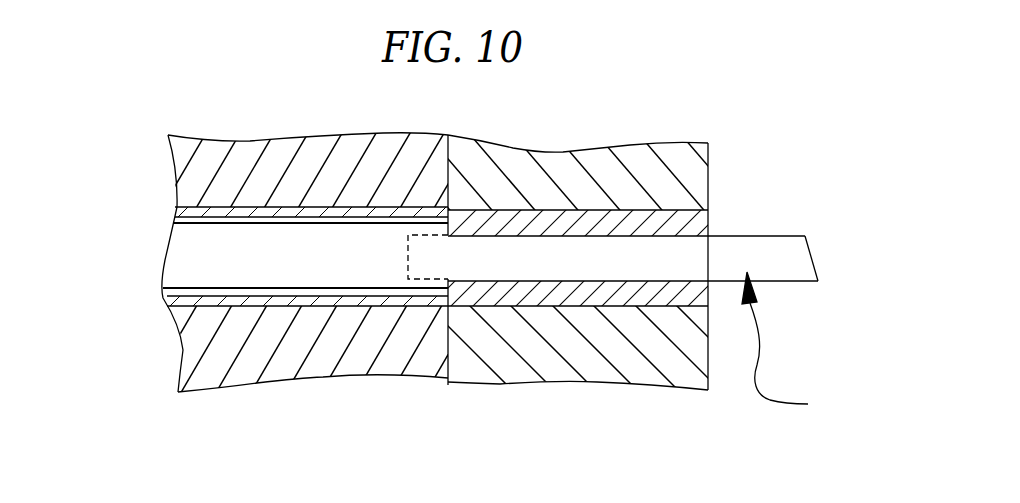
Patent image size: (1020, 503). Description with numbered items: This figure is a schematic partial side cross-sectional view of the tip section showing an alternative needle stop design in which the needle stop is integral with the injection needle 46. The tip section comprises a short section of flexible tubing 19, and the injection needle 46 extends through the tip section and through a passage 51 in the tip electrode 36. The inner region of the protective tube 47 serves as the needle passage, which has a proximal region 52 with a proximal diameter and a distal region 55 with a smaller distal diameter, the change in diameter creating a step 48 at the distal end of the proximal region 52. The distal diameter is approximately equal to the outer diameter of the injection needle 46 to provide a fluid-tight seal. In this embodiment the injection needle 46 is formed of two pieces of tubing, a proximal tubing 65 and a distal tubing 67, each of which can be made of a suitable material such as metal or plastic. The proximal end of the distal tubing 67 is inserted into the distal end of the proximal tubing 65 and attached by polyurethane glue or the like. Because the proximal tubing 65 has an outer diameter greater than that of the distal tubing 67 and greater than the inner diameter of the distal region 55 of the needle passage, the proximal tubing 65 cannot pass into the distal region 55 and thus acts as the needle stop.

The tubing 19 is at (332, 360).
The tip electrode 36 is at (510, 366).
The injection needle 46 is at (798, 348).
The protective tube 47 is at (690, 220).
The step 48 is at (424, 217).
The passage 51 is at (630, 306).
The proximal region 52 is at (243, 211).
The distal region 55 is at (682, 237).
The proximal tubing 65 is at (198, 247).
The distal tubing 67 is at (520, 250).